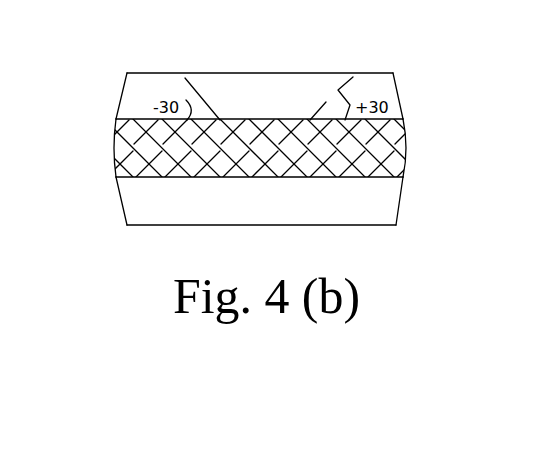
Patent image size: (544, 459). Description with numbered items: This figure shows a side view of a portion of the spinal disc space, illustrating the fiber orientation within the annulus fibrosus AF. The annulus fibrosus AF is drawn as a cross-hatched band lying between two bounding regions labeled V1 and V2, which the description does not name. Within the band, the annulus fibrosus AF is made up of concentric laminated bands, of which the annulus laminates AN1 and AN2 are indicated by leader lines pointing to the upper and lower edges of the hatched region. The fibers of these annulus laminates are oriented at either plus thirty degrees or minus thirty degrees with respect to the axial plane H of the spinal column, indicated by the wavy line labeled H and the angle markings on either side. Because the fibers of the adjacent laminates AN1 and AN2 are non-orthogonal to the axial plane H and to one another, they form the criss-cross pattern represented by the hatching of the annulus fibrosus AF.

The axial plane H is at (253, 120).
The first (upper) substrate layer V1 is at (293, 102).
The second (lower) substrate layer V2 is at (320, 203).
The annulus laminate AN1 is at (360, 140).
The annulus fibrosus AF is at (412, 147).
The annulus laminate AN2 is at (418, 175).